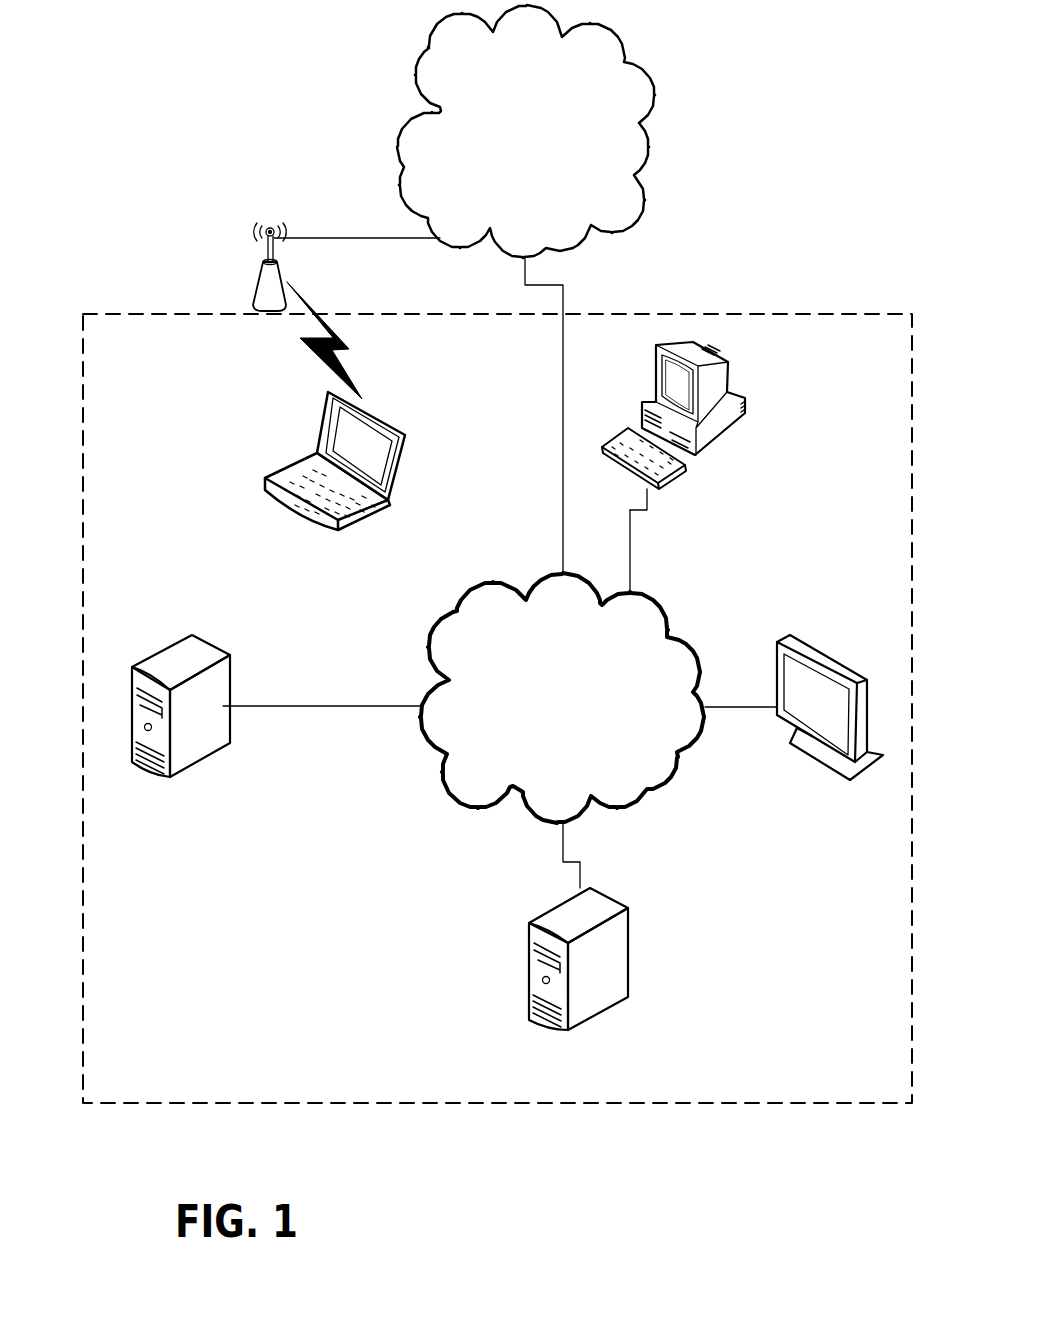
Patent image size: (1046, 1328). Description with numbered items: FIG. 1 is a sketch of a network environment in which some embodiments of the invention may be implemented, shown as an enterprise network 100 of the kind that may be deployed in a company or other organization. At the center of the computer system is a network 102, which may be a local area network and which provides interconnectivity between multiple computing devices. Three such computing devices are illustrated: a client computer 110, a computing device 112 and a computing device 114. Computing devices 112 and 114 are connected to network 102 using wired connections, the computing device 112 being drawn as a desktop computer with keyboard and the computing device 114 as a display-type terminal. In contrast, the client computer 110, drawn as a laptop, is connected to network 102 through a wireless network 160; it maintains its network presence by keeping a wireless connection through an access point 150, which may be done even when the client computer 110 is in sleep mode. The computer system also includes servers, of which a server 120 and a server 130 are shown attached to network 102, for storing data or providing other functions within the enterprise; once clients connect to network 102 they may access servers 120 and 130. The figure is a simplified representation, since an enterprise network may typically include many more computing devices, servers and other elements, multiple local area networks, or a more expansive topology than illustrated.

The enterprise network 100 is at (712, 1107).
The network 102 is at (587, 713).
The client computer 110 is at (298, 452).
The computing device 112 is at (748, 416).
The computing device 114 is at (833, 655).
The server 120 is at (615, 1007).
The server 130 is at (213, 753).
The access point 150 is at (267, 222).
The wireless network 160 is at (546, 160).